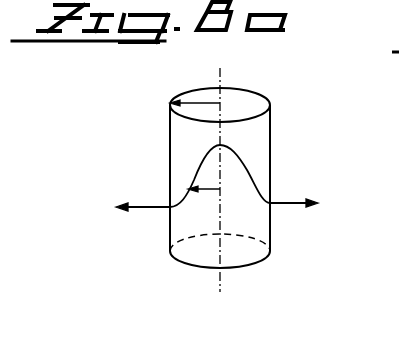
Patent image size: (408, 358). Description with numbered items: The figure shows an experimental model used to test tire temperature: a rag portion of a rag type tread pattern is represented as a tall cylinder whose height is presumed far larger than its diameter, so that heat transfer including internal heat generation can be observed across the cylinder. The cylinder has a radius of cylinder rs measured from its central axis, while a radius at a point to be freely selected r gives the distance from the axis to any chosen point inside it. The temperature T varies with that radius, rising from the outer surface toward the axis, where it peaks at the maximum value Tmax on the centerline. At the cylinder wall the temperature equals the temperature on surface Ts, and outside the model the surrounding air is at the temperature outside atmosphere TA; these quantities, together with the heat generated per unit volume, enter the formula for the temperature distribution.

The temperature T is at (248, 163).
The maximum temperature at axis Tmax is at (236, 138).
The radius of cylinder rs is at (195, 106).
The radius at a point to be freely selected r is at (204, 180).
The temperature on surface Ts is at (217, 197).
The temperature outside atmosphere TA is at (340, 243).